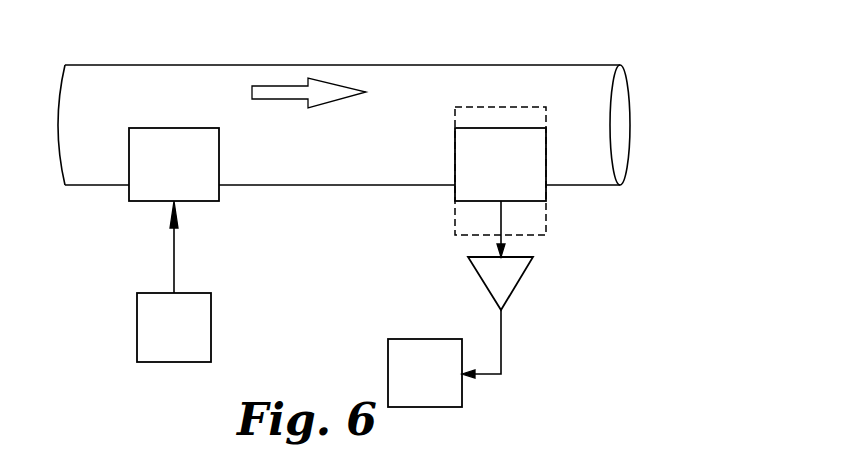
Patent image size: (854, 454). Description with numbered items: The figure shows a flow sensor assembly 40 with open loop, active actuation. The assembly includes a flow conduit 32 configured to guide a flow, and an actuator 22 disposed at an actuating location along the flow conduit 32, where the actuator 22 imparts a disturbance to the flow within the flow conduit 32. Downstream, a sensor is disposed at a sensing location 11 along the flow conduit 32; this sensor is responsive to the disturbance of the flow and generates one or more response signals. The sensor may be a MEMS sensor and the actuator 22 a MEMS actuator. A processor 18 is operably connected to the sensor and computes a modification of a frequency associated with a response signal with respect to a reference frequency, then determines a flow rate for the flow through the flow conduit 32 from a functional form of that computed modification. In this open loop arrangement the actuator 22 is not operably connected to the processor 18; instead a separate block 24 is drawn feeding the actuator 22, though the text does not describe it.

The flow sensor assembly 40 is at (63, 47).
The actuator 22 is at (157, 128).
The sensing location 11 is at (502, 107).
The flow conduit 32 is at (600, 65).
The controller 24 is at (188, 337).
The processor 18 is at (439, 384).